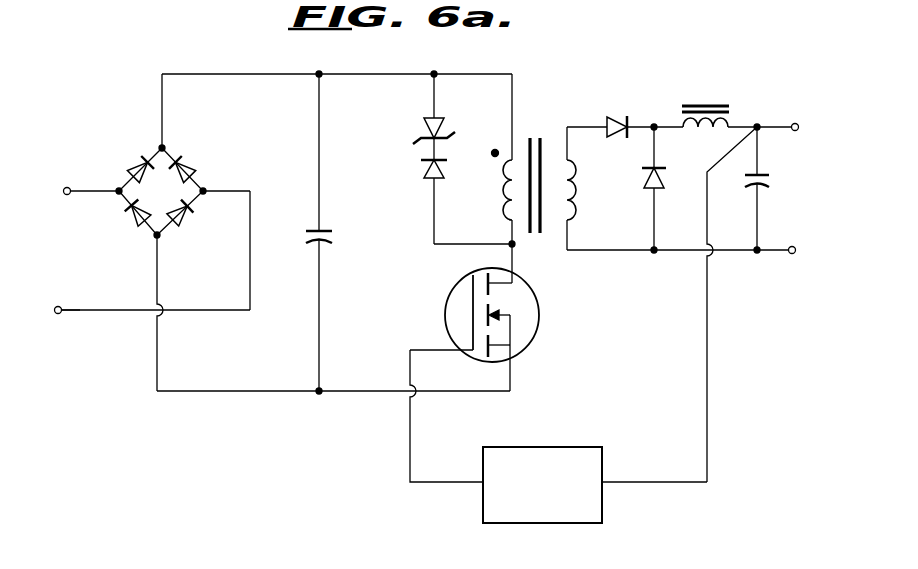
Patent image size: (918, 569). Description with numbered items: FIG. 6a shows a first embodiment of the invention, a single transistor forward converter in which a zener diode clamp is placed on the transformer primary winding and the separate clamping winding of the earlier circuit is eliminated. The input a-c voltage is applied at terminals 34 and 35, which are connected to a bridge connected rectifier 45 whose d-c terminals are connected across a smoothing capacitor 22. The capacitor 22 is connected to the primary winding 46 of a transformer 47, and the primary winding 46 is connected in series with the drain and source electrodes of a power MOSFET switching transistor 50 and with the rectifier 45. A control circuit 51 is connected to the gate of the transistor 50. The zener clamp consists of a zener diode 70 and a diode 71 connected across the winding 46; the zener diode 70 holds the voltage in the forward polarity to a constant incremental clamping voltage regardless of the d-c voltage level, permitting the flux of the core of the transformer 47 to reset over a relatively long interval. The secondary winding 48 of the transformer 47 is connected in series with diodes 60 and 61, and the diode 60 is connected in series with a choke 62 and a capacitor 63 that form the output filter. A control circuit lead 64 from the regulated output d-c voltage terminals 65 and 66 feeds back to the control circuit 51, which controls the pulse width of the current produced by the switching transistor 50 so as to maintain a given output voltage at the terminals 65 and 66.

The input terminal 34 is at (71, 184).
The input terminal 35 is at (59, 314).
The bridge connected rectifier 45 is at (165, 166).
The smoothing capacitor 22 is at (342, 228).
The zener diode 70 is at (423, 128).
The diode 71 is at (430, 181).
The primary winding 46 is at (501, 192).
The transformer 47 is at (540, 136).
The secondary winding 48 is at (577, 193).
The diode 60 is at (611, 118).
The diode 61 is at (650, 192).
The choke 62 is at (714, 92).
The capacitor 63 is at (768, 184).
The control circuit lead 64 is at (707, 393).
The output d-c voltage terminal 65 is at (803, 108).
The output d-c voltage terminal 66 is at (792, 254).
The power MOSFET switching transistor 50 is at (538, 329).
The control circuit 51 is at (555, 447).